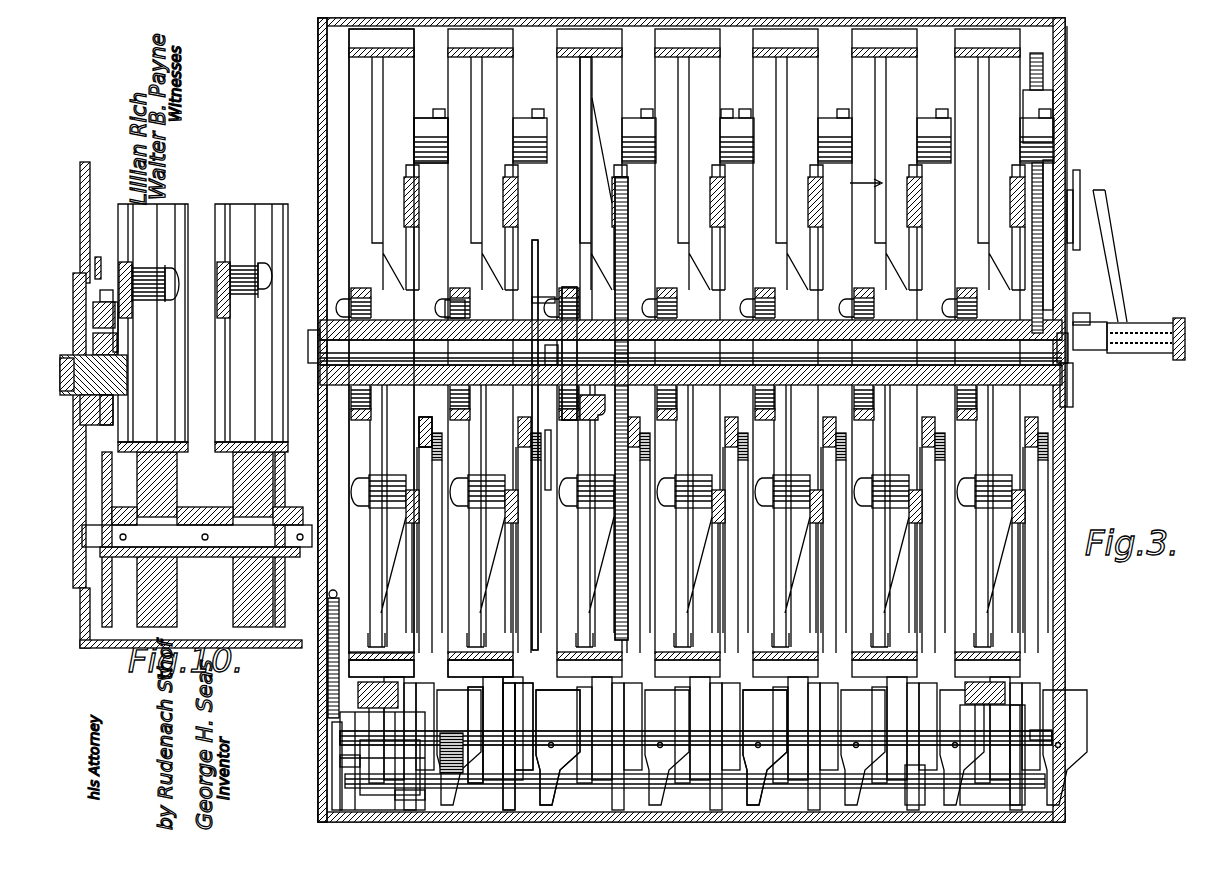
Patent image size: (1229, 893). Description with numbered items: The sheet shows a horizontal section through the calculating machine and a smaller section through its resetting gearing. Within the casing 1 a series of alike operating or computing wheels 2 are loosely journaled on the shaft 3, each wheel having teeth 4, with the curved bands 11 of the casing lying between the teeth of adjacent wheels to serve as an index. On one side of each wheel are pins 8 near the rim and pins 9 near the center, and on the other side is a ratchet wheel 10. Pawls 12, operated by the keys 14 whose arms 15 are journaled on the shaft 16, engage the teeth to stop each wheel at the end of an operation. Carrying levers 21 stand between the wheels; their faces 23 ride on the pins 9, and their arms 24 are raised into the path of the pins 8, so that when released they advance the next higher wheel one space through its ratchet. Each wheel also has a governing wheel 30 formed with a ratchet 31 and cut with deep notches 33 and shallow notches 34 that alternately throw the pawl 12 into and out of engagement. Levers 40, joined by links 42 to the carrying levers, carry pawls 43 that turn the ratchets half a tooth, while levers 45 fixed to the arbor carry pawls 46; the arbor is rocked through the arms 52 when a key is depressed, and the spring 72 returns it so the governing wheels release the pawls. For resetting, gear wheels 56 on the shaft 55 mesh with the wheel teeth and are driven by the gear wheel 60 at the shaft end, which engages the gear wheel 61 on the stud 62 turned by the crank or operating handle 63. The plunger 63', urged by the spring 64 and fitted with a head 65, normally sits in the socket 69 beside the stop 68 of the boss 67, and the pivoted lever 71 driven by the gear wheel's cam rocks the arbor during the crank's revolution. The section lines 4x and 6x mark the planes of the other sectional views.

In FIG. 3, the casing 1 is at (330, 420).
In FIG. 10, the casing 1 is at (93, 222).
In FIG. 3, the operating or computing wheels 2 is at (381, 341).
In FIG. 3, the shaft 3 is at (685, 352).
In FIG. 3, the teeth 4 is at (496, 40).
In FIG. 10, the teeth 4 is at (280, 462).
In FIG. 3, the section line 4x- 4x is at (1033, 59).
In FIG. 3, the section line 6x- 6x is at (696, 421).
In FIG. 3, the pins 8 is at (738, 118).
In FIG. 3, the pins 9 is at (455, 303).
In FIG. 3, the ratchet wheel 10 is at (618, 215).
In FIG. 10, the ratchet wheel 10 is at (176, 285).
In FIG. 3, the curved bands 11 is at (378, 696).
In FIG. 3, the pawls 12 is at (461, 735).
In FIG. 10, the pawls 12 is at (168, 352).
In FIG. 3, the keys 14 is at (990, 700).
In FIG. 3, the arm 15 is at (689, 748).
In FIG. 3, the shaft 16 is at (689, 763).
In FIG. 3, the levers 21 is at (540, 450).
In FIG. 3, the faces 23 is at (540, 297).
In FIG. 3, the arms 24 is at (444, 434).
In FIG. 3, the governing wheels 30 is at (376, 766).
In FIG. 3, the ratchets 31 is at (530, 745).
In FIG. 3, the deep notches 33 is at (454, 753).
In FIG. 3, the shallow notches 34 is at (424, 805).
In FIG. 3, the levers 40 is at (540, 720).
In FIG. 3, the links 42 is at (530, 640).
In FIG. 3, the pawls 43 is at (582, 668).
In FIG. 3, the levers 45 is at (540, 782).
In FIG. 3, the pawls 46 is at (495, 780).
In FIG. 3, the arms 52 is at (340, 760).
In FIG. 3, the shaft 55 is at (530, 132).
In FIG. 10, the shaft 55 is at (210, 545).
In FIG. 10, the gear wheels 56 is at (186, 480).
In FIG. 3, the gear wheel 60 is at (1040, 70).
In FIG. 10, the gear wheel 60 is at (96, 396).
In FIG. 3, the gear wheel 61 is at (1040, 195).
In FIG. 10, the gear wheel 61 is at (108, 420).
In FIG. 3, the stud 62 is at (1050, 205).
In FIG. 10, the stud 62 is at (131, 361).
In FIG. 3, the crank or operating handle 63 is at (1124, 256).
In FIG. 3, the plunger 63' is at (1142, 320).
In FIG. 3, the spring 64 is at (1130, 358).
In FIG. 3, the head 65 is at (1178, 362).
In FIG. 3, the boss 67 is at (1070, 365).
In FIG. 3, the stop 68 is at (1075, 390).
In FIG. 3, the depression or socket 69 is at (1089, 302).
In FIG. 3, the pivoted lever 71 is at (1052, 245).
In FIG. 10, the pivoted lever 71 is at (110, 251).
In FIG. 3, the spring 72 is at (328, 690).